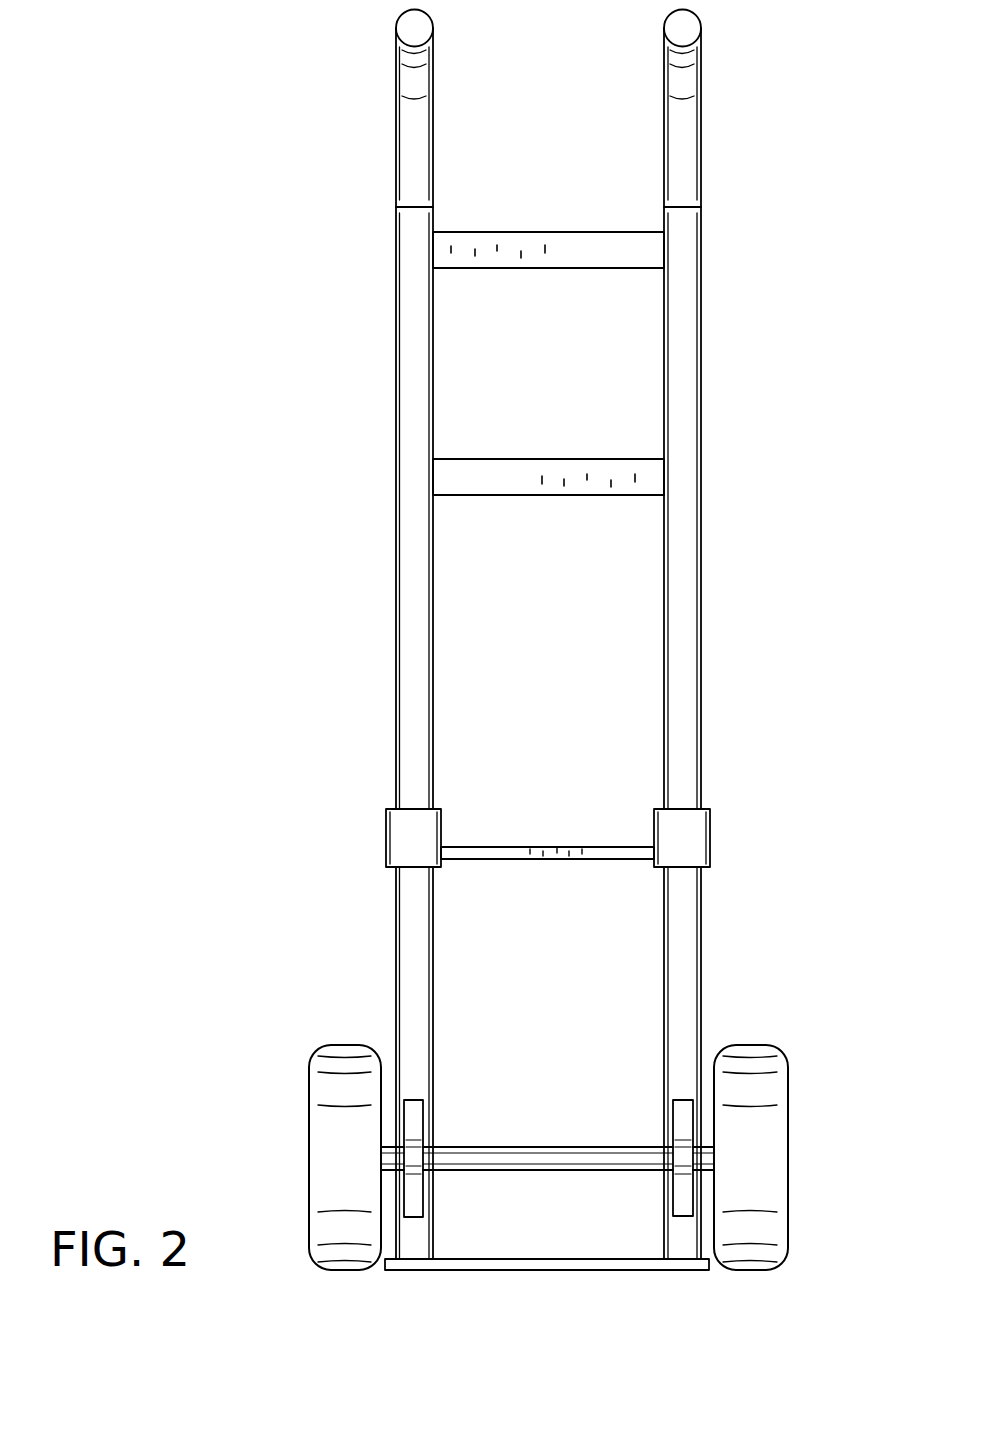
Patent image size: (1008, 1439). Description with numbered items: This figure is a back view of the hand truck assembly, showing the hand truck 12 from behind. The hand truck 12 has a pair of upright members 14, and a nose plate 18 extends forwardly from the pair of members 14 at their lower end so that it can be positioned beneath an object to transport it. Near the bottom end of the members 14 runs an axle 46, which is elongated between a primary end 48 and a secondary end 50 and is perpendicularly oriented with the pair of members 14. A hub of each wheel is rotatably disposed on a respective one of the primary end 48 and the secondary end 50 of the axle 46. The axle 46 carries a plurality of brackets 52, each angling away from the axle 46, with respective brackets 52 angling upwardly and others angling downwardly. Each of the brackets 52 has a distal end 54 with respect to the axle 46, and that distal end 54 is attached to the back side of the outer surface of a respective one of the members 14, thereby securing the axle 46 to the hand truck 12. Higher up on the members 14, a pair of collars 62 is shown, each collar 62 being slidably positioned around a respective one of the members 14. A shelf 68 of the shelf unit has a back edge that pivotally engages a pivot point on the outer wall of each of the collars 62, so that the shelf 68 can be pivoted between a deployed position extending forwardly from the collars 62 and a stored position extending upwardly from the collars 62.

The hand truck 12 is at (383, 375).
The members 14 is at (396, 313).
The nose plate 18 is at (412, 1270).
The axle 46 is at (547, 1170).
The primary end 48 is at (383, 1155).
The secondary end 50 is at (714, 1155).
The brackets 52 is at (417, 1128).
The distal end 54 is at (412, 1098).
The collars 62 is at (386, 824).
The shelf 68 is at (607, 845).